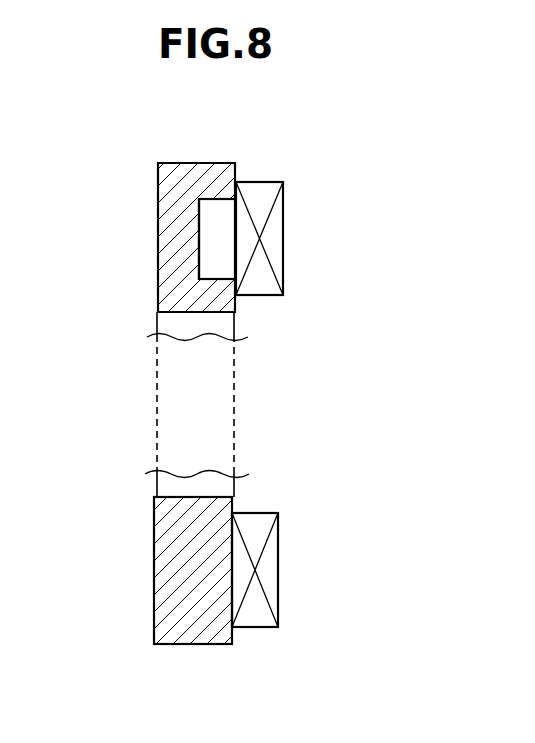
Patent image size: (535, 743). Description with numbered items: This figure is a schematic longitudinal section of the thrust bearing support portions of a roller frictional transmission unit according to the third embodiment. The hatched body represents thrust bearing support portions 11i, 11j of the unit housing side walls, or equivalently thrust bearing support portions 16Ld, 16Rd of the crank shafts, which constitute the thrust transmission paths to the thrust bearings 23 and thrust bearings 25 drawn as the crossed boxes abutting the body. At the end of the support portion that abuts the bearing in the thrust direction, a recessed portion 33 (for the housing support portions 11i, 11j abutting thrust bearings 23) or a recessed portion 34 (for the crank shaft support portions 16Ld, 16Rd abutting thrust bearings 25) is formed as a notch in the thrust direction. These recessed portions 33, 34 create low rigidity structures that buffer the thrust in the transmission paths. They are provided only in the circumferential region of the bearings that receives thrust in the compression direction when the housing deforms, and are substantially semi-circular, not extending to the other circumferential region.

The thrust bearing support portion 11i is at (305, 418).
The thrust bearing support portion 11j is at (305, 418).
The thrust bearing support portion 16Ld is at (305, 418).
The thrust bearing support portion 16Rd is at (212, 163).
The thrust bearing 23 is at (323, 382).
The thrust bearing 25 is at (259, 182).
The recessed portion 33 is at (132, 253).
The recessed portion 34 is at (200, 230).